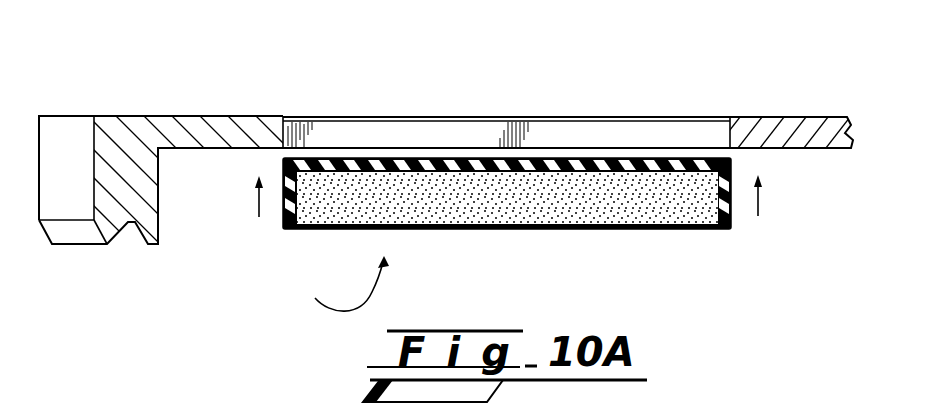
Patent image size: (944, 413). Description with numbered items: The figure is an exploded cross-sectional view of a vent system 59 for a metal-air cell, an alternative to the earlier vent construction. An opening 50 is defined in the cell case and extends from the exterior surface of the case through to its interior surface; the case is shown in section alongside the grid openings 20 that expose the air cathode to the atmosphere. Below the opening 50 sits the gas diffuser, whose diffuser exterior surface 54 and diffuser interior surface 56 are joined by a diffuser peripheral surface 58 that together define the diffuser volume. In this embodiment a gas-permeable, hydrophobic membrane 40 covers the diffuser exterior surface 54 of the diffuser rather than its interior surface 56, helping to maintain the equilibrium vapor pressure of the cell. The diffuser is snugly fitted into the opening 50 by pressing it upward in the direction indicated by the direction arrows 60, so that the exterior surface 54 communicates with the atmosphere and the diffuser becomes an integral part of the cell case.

The openings 20 is at (207, 117).
The opening 50 is at (660, 128).
The diffuser exterior surface 54 is at (405, 168).
The diffuser interior surface 56 is at (622, 229).
The diffuser peripheral surface 58 is at (283, 186).
The gas-permeable, hydrophobic membrane 40 is at (729, 172).
The vent system 59 is at (333, 283).
The direction arrows 60 is at (508, 198).